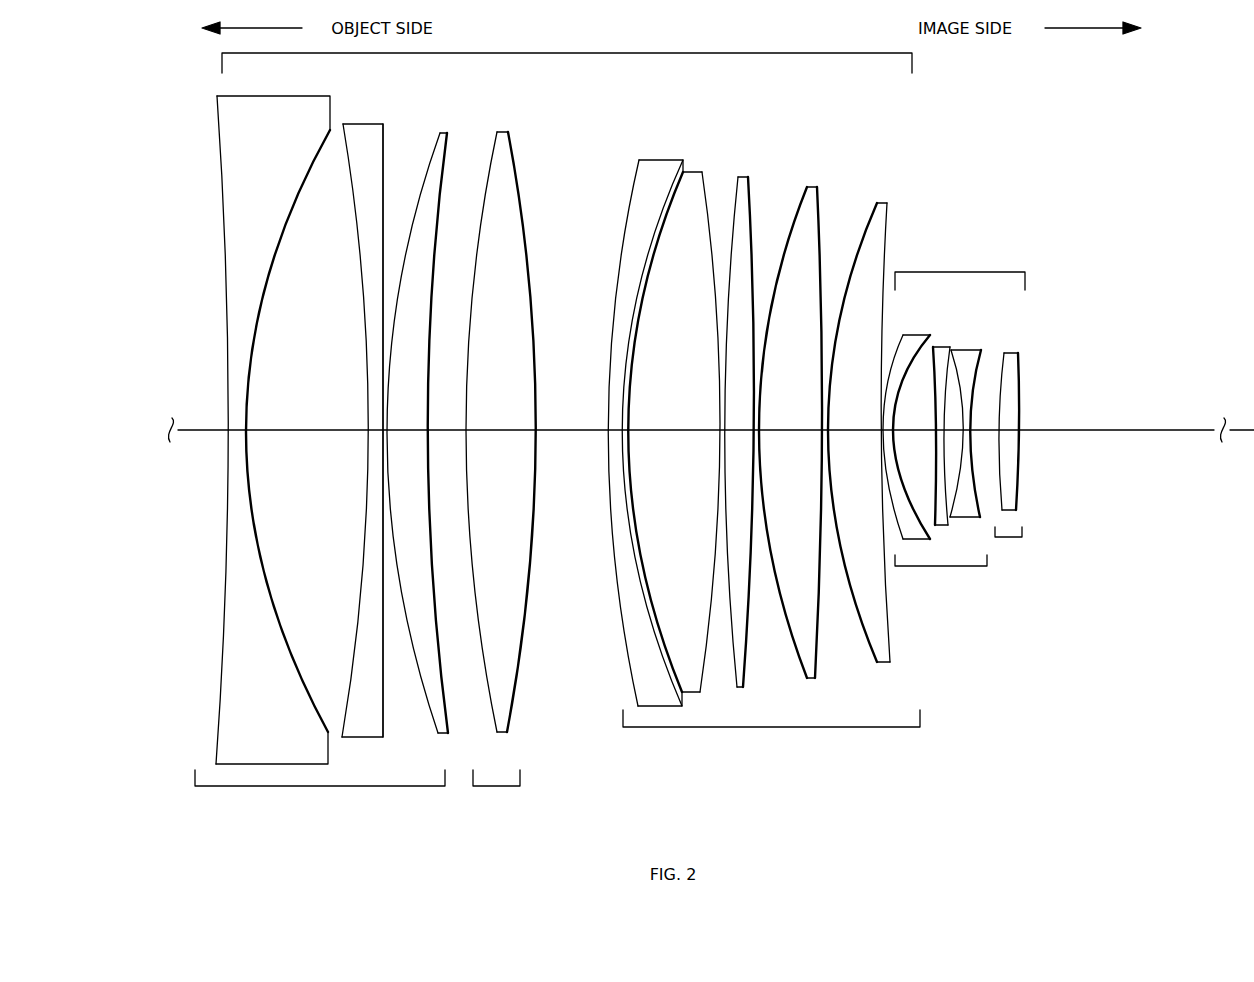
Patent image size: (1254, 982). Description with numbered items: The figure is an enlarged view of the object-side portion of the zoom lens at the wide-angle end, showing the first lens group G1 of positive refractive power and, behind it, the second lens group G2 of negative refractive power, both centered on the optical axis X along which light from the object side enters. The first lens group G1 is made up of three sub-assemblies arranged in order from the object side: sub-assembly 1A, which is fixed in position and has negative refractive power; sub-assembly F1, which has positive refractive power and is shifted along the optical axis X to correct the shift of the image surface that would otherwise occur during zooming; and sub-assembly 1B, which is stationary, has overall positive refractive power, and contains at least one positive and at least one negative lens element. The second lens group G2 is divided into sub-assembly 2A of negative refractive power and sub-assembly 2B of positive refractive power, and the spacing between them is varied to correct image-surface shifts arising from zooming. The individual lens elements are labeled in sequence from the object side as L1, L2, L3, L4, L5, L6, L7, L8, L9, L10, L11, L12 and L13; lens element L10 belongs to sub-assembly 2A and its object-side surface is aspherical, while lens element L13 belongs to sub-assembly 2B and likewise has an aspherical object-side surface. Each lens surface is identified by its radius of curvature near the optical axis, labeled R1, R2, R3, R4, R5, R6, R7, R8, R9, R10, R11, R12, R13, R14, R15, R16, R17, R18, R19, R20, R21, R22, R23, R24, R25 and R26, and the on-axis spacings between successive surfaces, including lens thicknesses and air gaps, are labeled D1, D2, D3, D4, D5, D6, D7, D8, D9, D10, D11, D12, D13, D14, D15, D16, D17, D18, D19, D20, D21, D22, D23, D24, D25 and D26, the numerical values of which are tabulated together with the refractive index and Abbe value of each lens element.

The first lens group G1 is at (553, 425).
The second lens group G2 is at (961, 423).
The sub-assembly 1A is at (330, 440).
The sub-assembly F1 is at (508, 446).
The sub-assembly 1B is at (749, 429).
The sub-assembly 2A is at (956, 441).
The sub-assembly 2B is at (1015, 442).
The optical axis X is at (711, 450).
The first lens L1 is at (250, 411).
The second lens L2 is at (365, 406).
The third lens L3 is at (439, 403).
The fourth lens L4 is at (508, 401).
The fifth lens L5 is at (645, 403).
The sixth lens L6 is at (651, 404).
The seventh lens L7 is at (732, 403).
The eighth lens L8 is at (808, 404).
The ninth lens L9 is at (877, 404).
The lens element L10 is at (907, 422).
The eleventh lens L11 is at (1003, 414).
The twelfth lens L12 is at (1012, 425).
The lens element L13 is at (1015, 434).
The lens surface 1 R1 is at (222, 212).
The lens surface 2 R2 is at (298, 198).
The lens surface 3 R3 is at (348, 196).
The lens surface 4 R4 is at (385, 170).
The lens surface 5 R5 is at (437, 142).
The lens surface 6 R6 is at (450, 160).
The lens surface 7 R7 is at (484, 246).
The lens surface 8 R8 is at (516, 213).
The lens surface 9 R9 is at (623, 233).
The lens surface 10 R10 is at (645, 300).
The lens surface 11 R11 is at (636, 337).
The lens surface 12 R12 is at (704, 190).
The lens surface 13 R13 is at (732, 247).
The lens surface 14 R14 is at (748, 194).
The lens surface 15 R15 is at (790, 245).
The lens surface 16 R16 is at (817, 207).
The lens surface 17 R17 is at (862, 253).
The lens surface 18 R18 is at (888, 237).
The lens surface 19 R19 is at (899, 353).
The lens surface 20 R20 is at (932, 528).
The lens surface 21 R21 is at (932, 350).
The lens surface 22 R22 is at (944, 378).
The lens surface 23 R23 is at (954, 398).
The lens surface 24 R24 is at (975, 404).
The lens surface 25 R25 is at (1001, 497).
The lens surface 26 R26 is at (1020, 504).
The axial thickness/distance 1 D1 is at (238, 431).
The axial distance 2 D2 is at (303, 430).
The axial distance 3 D3 is at (373, 431).
The axial distance 4 D4 is at (386, 430).
The axial distance 5 D5 is at (410, 432).
The axial distance 6 D6 is at (446, 430).
The axial distance 7 D7 is at (499, 432).
The axial distance 8 D8 is at (569, 430).
The axial distance 9 D9 is at (612, 434).
The axial distance 10 D10 is at (627, 434).
The axial distance 11 D11 is at (668, 430).
The axial distance 12 D12 is at (720, 434).
The axial distance 13 D13 is at (740, 431).
The axial distance 14 D14 is at (760, 430).
The axial distance 15 D15 is at (796, 432).
The axial distance 16 D16 is at (823, 430).
The axial distance 17 D17 is at (848, 434).
The axial distance 18 D18 is at (878, 498).
The axial distance 19 D19 is at (880, 430).
The axial distance 20 D20 is at (888, 430).
The axial distance 21 D21 is at (1010, 436).
The axial distance 22 D22 is at (988, 435).
The axial distance 23 D23 is at (966, 435).
The axial distance 24 D24 is at (952, 434).
The axial distance 25 D25 is at (1045, 430).
The axial distance 26 D26 is at (1159, 430).